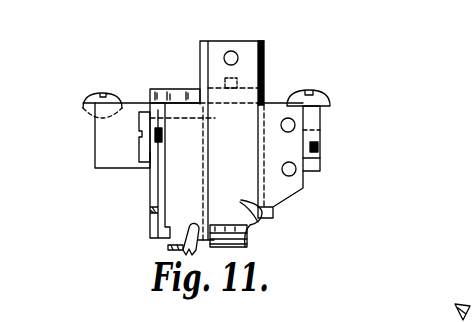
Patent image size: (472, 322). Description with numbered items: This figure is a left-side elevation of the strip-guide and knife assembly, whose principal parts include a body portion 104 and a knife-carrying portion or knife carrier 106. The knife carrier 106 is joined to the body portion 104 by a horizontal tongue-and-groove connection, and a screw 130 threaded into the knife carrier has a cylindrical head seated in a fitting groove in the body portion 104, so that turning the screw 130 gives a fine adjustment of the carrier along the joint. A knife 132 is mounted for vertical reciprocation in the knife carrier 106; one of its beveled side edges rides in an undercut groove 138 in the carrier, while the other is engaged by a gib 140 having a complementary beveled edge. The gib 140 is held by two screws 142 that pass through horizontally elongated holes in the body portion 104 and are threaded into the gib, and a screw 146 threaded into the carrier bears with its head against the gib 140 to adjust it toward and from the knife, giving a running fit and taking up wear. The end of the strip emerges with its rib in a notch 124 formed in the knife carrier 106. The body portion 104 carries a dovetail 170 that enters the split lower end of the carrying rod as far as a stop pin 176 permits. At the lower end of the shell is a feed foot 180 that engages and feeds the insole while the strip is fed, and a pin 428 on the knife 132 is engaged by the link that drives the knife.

The body portion 104 is at (112, 155).
The knife carrier 106 is at (174, 207).
The notch 124 is at (175, 245).
The screw 130 is at (147, 146).
The knife 132 is at (265, 214).
The undercut groove 138 is at (210, 175).
The gib 140 is at (294, 137).
The screws 142 is at (282, 118).
The screw 146 is at (319, 150).
The dovetail 170 is at (163, 90).
The stop pin 176 is at (237, 80).
The feed foot 180 is at (187, 253).
The pin 428 is at (237, 55).